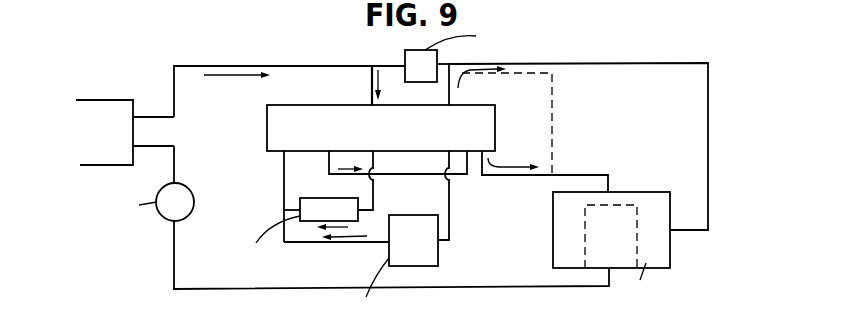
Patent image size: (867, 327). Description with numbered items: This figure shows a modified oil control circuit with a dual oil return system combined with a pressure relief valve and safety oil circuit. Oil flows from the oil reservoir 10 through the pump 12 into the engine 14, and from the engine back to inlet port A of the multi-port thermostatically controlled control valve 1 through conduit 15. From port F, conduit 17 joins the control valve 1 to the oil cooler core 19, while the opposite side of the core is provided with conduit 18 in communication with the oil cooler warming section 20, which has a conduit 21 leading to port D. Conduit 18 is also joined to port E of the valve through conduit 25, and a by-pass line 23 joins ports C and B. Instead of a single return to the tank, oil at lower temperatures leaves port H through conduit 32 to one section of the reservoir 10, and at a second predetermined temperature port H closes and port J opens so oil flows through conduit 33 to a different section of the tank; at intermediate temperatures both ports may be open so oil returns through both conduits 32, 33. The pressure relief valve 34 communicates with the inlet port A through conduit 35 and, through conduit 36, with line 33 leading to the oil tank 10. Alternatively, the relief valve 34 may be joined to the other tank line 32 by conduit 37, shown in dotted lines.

The control valve 1 is at (489, 121).
The oil reservoir 10 is at (656, 248).
The pump 12 is at (185, 199).
The engine 14 is at (107, 109).
The conduit 15 is at (224, 67).
The conduit 17 is at (452, 210).
The conduit 18 is at (345, 245).
The oil cooler core 19 is at (439, 256).
The oil cooler warming section 20 is at (312, 203).
The conduit 21 is at (376, 181).
The by-pass line 23 is at (386, 178).
The conduit 25 is at (284, 194).
The conduit 32 is at (580, 176).
The conduit 33 is at (540, 63).
The pressure relief valve 34 is at (430, 61).
The conduit 35 is at (400, 64).
The conduit 36 is at (464, 57).
The conduit 37 is at (553, 136).